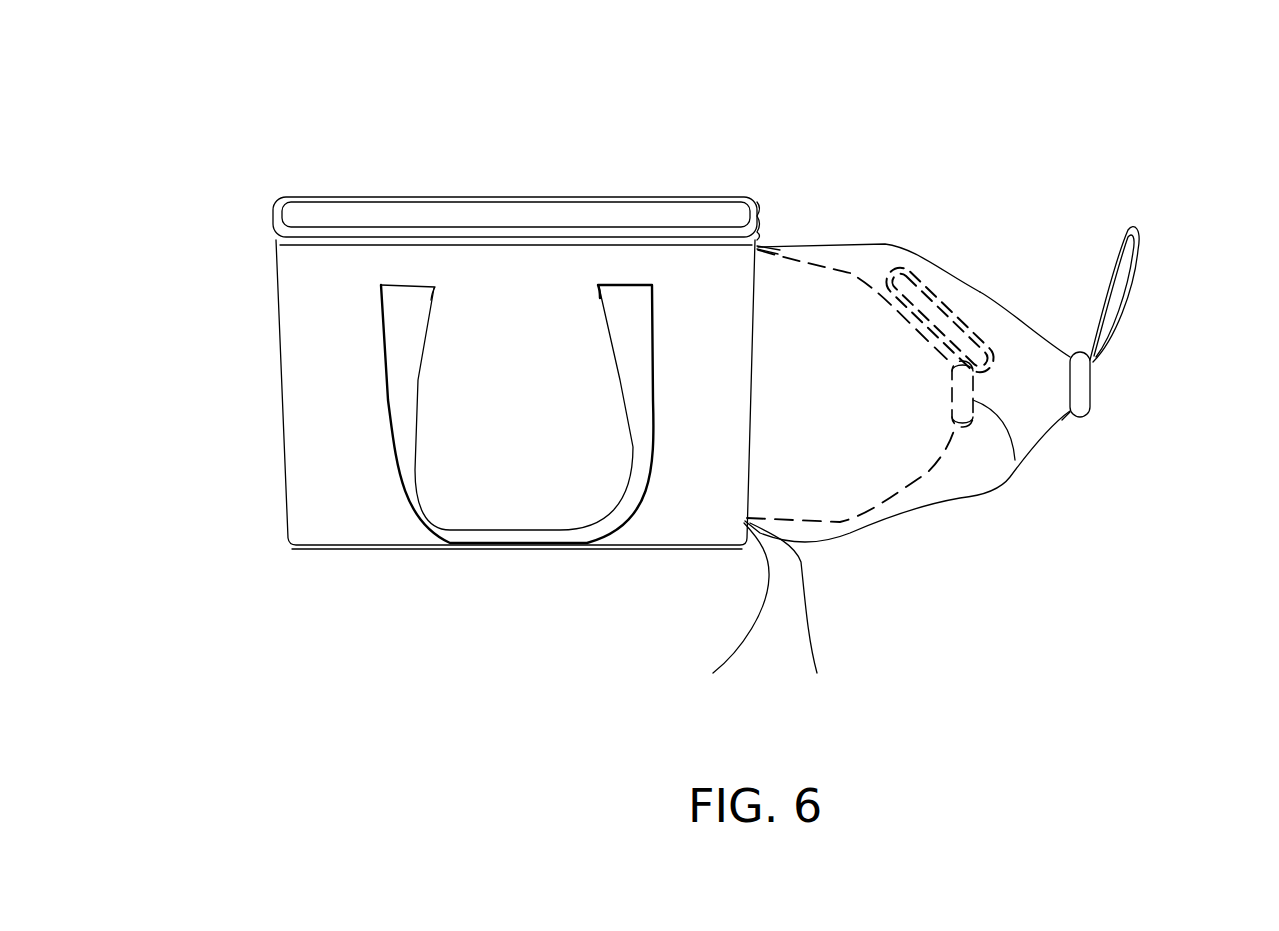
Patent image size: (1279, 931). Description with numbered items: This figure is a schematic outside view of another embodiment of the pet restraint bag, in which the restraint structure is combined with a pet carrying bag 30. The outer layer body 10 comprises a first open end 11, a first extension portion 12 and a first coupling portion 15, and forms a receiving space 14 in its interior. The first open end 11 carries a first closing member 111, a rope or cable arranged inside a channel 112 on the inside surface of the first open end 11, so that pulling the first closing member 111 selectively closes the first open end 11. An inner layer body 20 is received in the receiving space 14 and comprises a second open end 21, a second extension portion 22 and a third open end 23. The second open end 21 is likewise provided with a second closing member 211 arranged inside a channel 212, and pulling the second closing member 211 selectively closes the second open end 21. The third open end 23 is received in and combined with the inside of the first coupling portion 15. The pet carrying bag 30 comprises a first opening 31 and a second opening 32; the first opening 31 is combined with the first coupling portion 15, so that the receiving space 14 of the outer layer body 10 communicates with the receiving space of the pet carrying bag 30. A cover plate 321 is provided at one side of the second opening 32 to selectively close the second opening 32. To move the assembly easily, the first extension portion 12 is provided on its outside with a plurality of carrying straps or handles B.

The outer layer body 10 is at (1093, 490).
The first open end 11 is at (1091, 387).
The first closing member 111 is at (1133, 263).
The channel 112 is at (1086, 408).
The first extension portion 12 is at (913, 513).
The receiving space 14 is at (1008, 327).
The first coupling portion 15 is at (724, 623).
The inner layer body 20 is at (872, 263).
The second open end 21 is at (1015, 460).
The second closing member 211 is at (922, 283).
The channel 212 is at (962, 420).
The second extension portion 22 is at (840, 522).
The third open end 23 is at (799, 623).
The pet carrying bag 30 is at (306, 371).
The first opening 31 is at (758, 246).
The second opening 32 is at (695, 228).
The cover plate 321 is at (325, 230).
The carrying straps or handles B is at (523, 537).